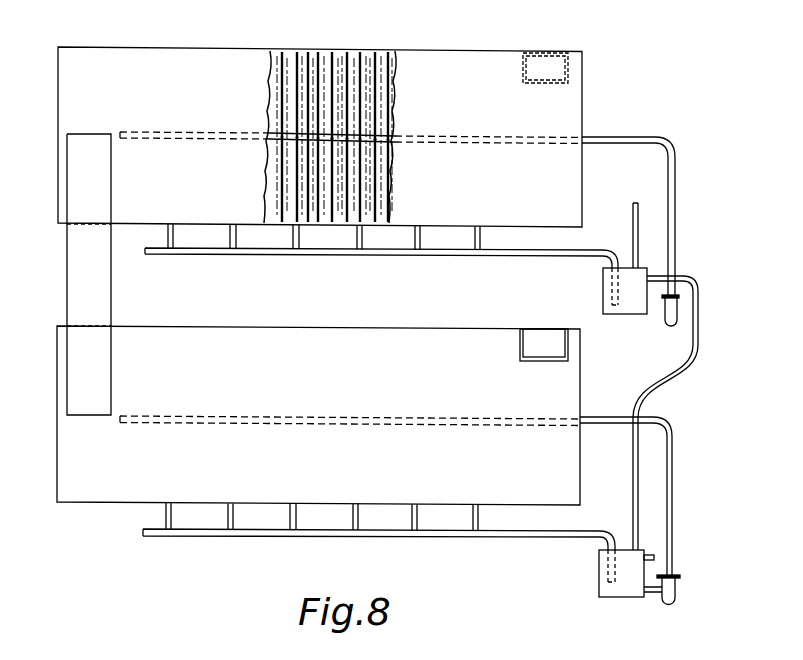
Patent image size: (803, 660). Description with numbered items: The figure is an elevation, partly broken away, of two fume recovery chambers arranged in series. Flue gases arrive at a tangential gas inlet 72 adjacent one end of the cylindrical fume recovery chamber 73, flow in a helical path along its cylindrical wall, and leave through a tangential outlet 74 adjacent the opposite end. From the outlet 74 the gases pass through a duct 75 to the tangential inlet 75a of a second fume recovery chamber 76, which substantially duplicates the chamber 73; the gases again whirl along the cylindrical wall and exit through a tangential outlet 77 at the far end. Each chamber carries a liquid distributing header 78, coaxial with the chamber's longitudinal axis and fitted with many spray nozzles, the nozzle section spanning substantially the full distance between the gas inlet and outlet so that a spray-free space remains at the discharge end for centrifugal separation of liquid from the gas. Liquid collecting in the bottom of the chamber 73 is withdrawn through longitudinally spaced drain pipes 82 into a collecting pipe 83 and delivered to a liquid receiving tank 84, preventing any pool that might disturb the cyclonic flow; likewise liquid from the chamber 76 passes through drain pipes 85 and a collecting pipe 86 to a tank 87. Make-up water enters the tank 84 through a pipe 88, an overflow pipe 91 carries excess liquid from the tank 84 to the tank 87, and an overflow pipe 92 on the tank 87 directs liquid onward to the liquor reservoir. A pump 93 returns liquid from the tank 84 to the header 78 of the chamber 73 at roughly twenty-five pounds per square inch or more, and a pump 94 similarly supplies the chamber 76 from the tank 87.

The tangential gas inlet 72 is at (541, 70).
The fume recovery chamber 73 is at (436, 190).
The tangential outlet 74 is at (99, 165).
The duct 75 is at (66, 269).
The tangential inlet 75a is at (99, 402).
The second fume recovery chamber 76 is at (436, 457).
The tangential outlet 77 is at (537, 346).
The liquid distributing header 78 is at (397, 139).
The drain pipes 82 is at (228, 238).
The collecting pipe 83 is at (401, 255).
The liquid receiving tank 84 is at (633, 315).
The drain pipes 85 is at (226, 518).
The collecting pipe 86 is at (336, 538).
The tank 87 is at (623, 599).
The pipe 88 is at (632, 221).
The overflow pipe 91 is at (699, 319).
The overflow pipe 92 is at (652, 555).
The pump 93 is at (670, 326).
The pump 94 is at (676, 598).